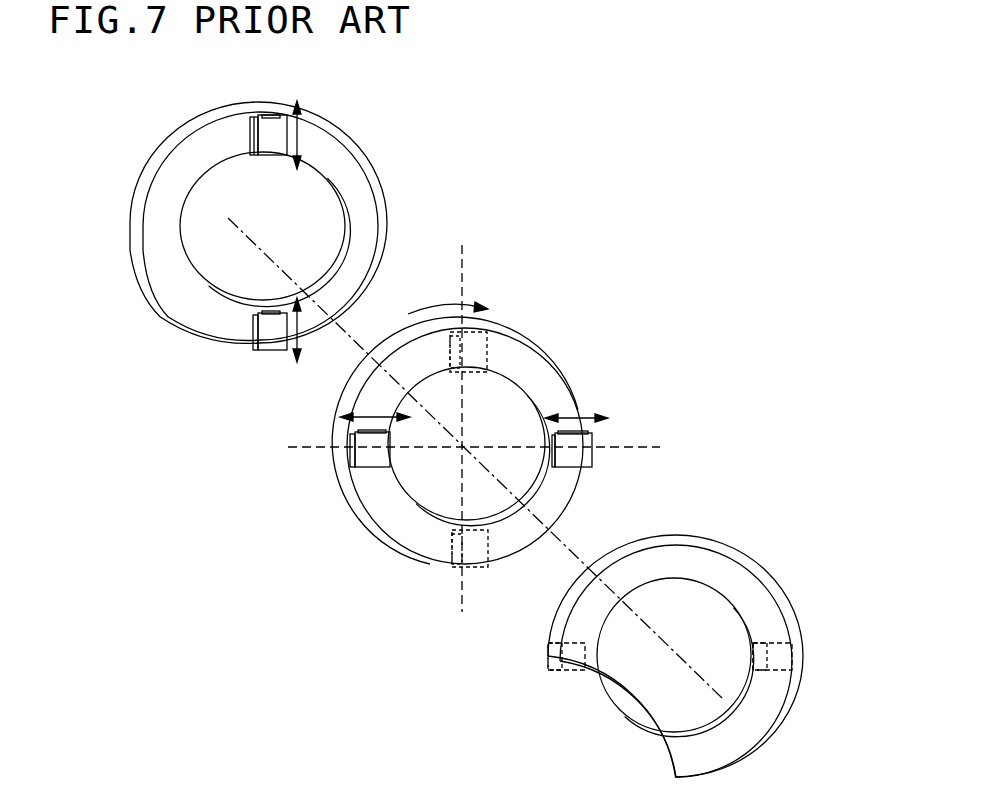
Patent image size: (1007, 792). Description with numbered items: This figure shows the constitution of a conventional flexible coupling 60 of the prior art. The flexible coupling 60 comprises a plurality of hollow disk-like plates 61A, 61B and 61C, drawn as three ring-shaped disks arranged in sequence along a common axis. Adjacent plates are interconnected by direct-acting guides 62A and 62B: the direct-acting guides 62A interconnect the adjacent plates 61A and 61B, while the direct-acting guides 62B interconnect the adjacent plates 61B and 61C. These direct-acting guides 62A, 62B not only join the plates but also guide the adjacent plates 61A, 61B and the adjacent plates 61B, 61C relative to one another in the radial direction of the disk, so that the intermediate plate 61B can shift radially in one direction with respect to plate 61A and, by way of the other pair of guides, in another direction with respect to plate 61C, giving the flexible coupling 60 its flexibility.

The flexible coupling 60 is at (590, 350).
The hollow disk-like plate 61A is at (702, 552).
The hollow disk-like plate 61B is at (398, 528).
The hollow disk-like plate 61C is at (337, 153).
The direct-acting guide 62A is at (362, 442).
The direct-acting guide 62B is at (265, 132).